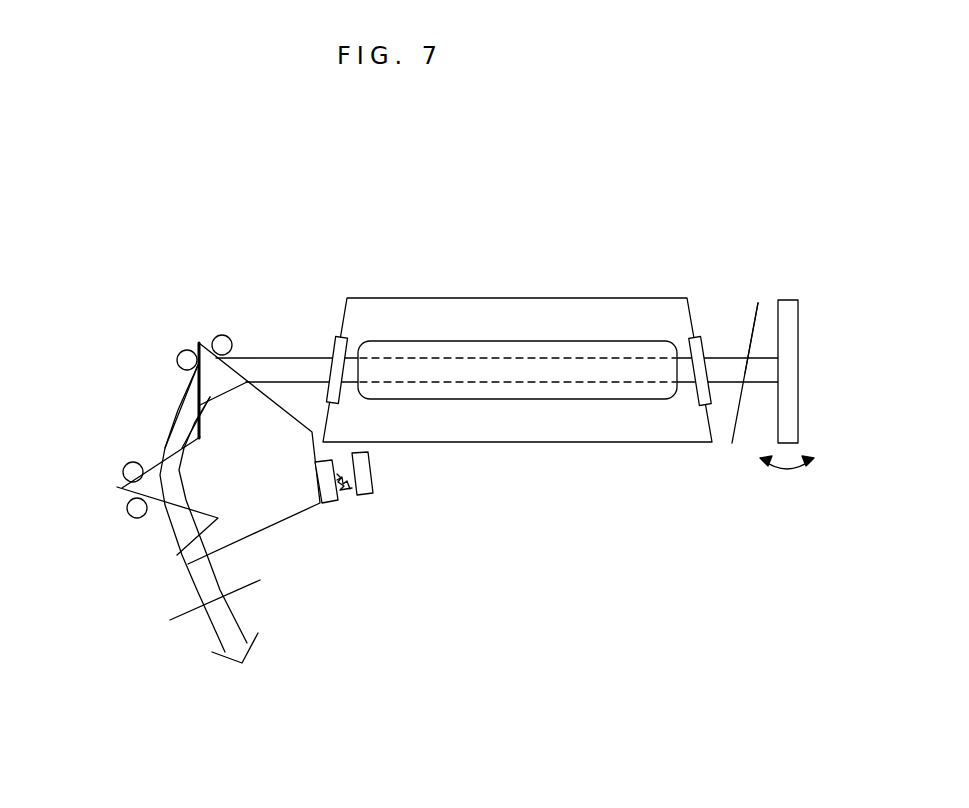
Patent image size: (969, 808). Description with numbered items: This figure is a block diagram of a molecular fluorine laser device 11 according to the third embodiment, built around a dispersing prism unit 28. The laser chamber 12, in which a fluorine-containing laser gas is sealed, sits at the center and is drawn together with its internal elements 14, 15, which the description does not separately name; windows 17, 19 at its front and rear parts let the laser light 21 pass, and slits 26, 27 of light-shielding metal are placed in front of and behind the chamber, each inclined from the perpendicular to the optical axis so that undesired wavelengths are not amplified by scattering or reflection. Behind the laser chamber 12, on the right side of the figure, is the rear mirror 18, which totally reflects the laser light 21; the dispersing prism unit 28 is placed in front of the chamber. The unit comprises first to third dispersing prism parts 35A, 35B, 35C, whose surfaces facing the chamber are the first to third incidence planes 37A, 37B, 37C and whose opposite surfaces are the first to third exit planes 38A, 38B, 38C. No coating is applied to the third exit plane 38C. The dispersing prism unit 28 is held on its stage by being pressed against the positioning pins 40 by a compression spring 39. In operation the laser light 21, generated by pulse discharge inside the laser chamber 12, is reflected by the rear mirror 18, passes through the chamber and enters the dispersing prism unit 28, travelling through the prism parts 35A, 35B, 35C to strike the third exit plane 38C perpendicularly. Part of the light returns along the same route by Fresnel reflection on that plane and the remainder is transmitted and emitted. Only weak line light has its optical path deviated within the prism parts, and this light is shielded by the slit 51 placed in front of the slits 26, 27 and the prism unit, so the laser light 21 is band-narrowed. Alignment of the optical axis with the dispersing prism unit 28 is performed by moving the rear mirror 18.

The molecular fluorine laser device 11 is at (770, 180).
The laser chamber 12 is at (608, 297).
The photosensitive drum 14 is at (440, 340).
The drum shaft 15 is at (517, 320).
The window 17 is at (696, 398).
The rear mirror 18 is at (795, 300).
The window 19 is at (328, 337).
The laser light 21 is at (212, 613).
The slit 26 is at (758, 313).
The slit 27 is at (300, 357).
The dispersing prism unit 28 is at (150, 272).
The first dispersing prism part 35A is at (205, 340).
The second dispersing prism part 35B is at (115, 487).
The third dispersing prism part 35C is at (190, 555).
The first incidence plane 37A is at (250, 357).
The second incidence plane 37B is at (162, 455).
The third incidence plane 37C is at (178, 562).
The first exit plane 38A is at (196, 386).
The second exit plane 38B is at (167, 518).
The third exit plane 38C is at (185, 572).
The compression spring 39 is at (370, 497).
The positioning pins 40 is at (218, 336).
The slit 51 is at (258, 583).